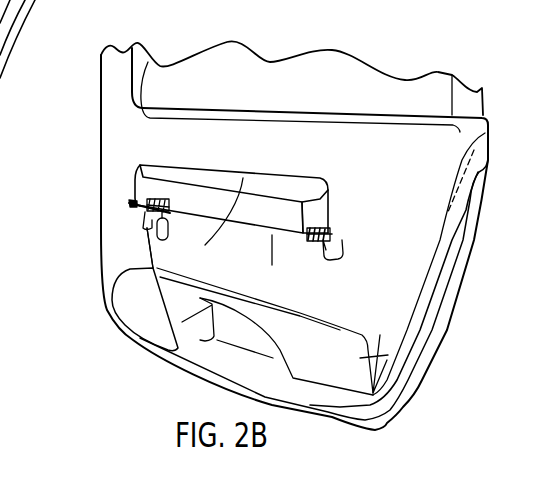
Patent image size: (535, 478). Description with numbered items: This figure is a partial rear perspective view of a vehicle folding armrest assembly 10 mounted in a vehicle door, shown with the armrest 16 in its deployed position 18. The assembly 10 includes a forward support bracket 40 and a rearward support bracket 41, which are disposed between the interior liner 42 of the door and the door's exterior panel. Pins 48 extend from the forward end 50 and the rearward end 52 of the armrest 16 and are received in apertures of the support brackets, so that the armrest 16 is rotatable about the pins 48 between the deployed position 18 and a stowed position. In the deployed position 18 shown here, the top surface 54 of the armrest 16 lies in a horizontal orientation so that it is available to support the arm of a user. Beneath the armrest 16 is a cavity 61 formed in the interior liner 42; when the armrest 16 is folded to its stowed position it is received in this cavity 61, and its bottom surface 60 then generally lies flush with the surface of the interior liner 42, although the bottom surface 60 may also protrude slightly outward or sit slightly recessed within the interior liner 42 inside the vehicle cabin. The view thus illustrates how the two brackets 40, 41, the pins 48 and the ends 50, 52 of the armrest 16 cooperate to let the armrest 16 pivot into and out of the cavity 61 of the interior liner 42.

The vehicle folding armrest assembly 10 is at (103, 221).
The armrest 16 is at (250, 193).
The deployed position 18 is at (112, 162).
The forward support bracket 40 is at (145, 234).
The rearward support bracket 41 is at (345, 250).
The interior liner 42 is at (407, 197).
The pins 48 is at (308, 235).
The forward end 50 is at (138, 164).
The rearward end 52 is at (320, 218).
The top surface 54 is at (253, 197).
The bottom surface 60 is at (272, 262).
The cavity 61 is at (219, 220).